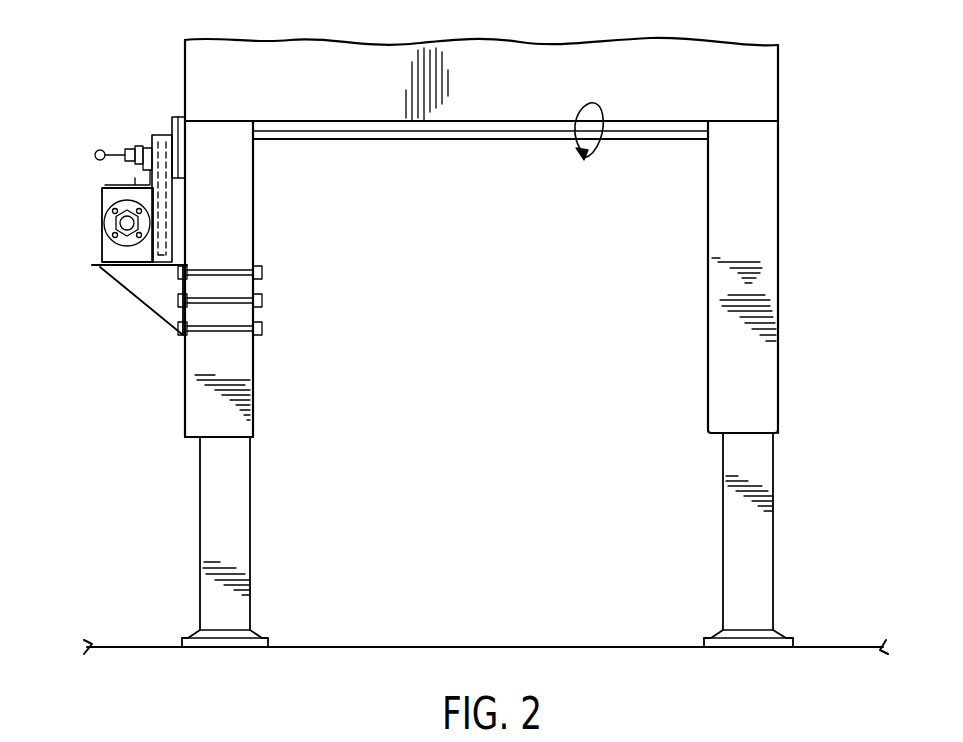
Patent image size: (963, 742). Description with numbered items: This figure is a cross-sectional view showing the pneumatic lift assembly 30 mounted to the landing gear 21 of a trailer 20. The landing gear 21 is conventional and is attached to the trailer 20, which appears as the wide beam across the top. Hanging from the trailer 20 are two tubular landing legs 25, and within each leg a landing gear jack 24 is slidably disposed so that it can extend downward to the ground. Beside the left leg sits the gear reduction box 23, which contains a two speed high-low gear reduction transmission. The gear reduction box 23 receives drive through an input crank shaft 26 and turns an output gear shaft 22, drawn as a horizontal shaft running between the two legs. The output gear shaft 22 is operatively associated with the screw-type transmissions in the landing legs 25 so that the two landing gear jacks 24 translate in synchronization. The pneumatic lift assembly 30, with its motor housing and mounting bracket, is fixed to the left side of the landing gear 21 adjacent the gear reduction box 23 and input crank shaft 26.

The trailer 20 is at (778, 82).
The landing gear 21 is at (812, 167).
The output gear shaft 22 is at (347, 141).
The gear reduction box 23 is at (183, 117).
The landing gear jacks 24 is at (252, 498).
The tubular landing legs 25 is at (778, 333).
The input crank shaft 26 is at (151, 134).
The pneumatic lift assembly 30 is at (92, 262).